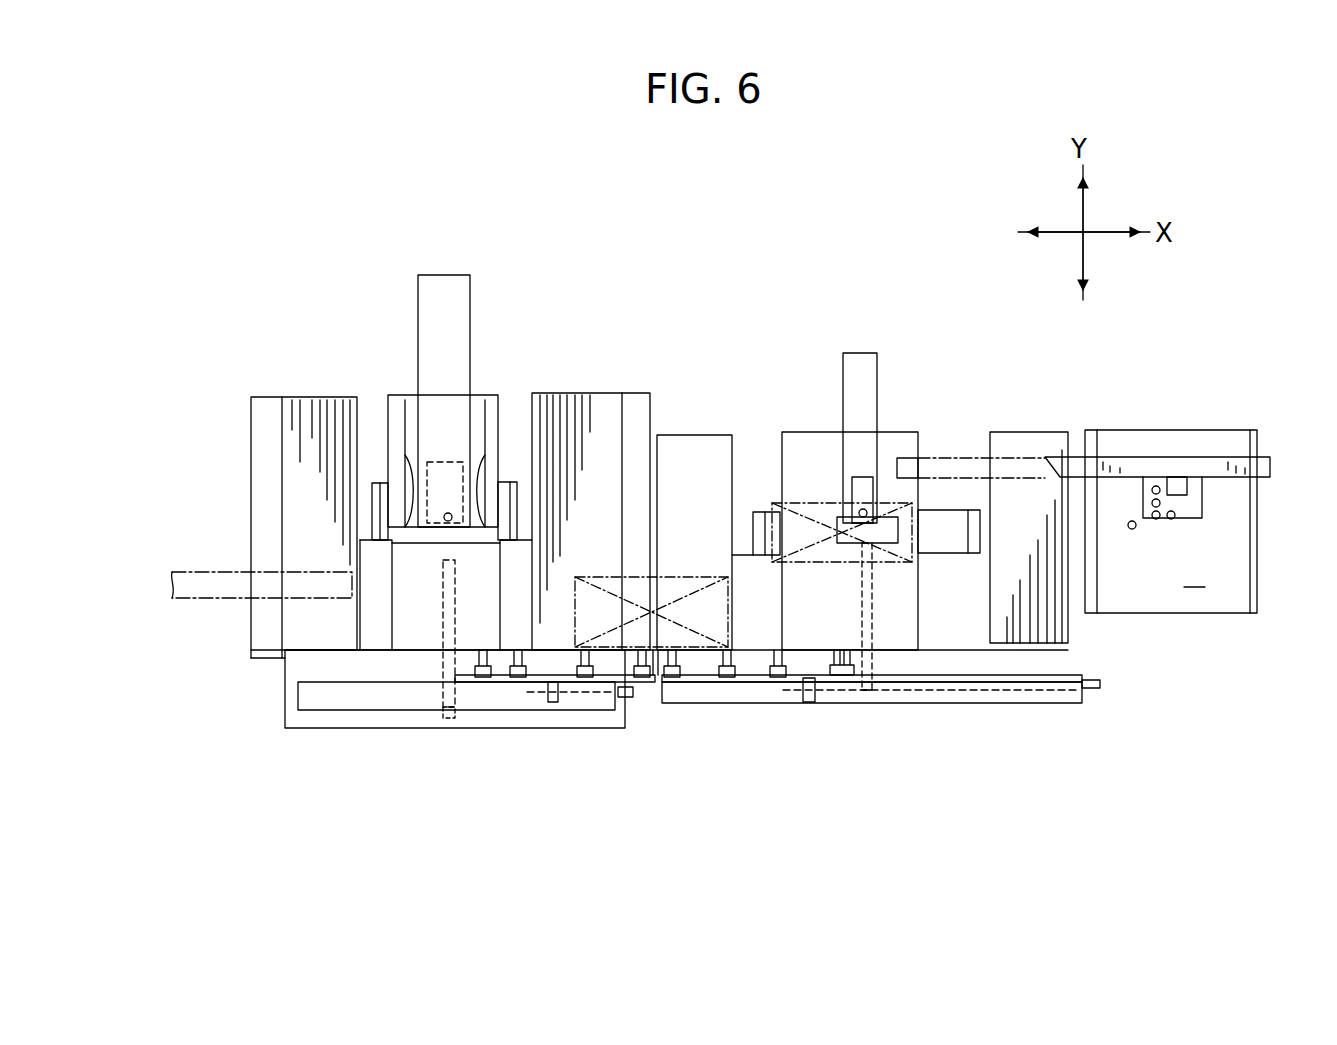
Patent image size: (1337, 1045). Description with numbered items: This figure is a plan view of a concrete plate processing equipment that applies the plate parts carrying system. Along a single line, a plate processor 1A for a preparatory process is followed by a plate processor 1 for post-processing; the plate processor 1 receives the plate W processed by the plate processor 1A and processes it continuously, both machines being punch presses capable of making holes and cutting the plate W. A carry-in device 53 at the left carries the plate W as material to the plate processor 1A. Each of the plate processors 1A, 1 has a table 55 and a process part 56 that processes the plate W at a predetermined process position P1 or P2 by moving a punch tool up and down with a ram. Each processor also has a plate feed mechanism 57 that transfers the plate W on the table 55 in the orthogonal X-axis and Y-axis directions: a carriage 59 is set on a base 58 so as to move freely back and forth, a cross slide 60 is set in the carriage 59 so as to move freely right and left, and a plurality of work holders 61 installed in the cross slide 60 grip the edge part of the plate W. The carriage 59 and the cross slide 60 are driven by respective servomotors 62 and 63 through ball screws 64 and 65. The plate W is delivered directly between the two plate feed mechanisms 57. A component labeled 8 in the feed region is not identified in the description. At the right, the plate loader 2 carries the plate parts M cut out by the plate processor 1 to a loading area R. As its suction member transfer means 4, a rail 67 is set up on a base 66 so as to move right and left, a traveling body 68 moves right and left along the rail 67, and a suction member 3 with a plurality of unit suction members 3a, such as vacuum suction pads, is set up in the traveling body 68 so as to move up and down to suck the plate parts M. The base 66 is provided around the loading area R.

The plate processor 1 is at (853, 340).
The plate processor 1A is at (441, 270).
The plate loader 2 is at (1185, 418).
The suction member 3 is at (1190, 507).
The unit suction members 3a is at (1157, 520).
The suction member transfer means 4 is at (1170, 474).
The support pin 8 is at (727, 678).
The carry-in device 53 is at (232, 575).
The table 55 is at (300, 415).
The process part 56 is at (447, 462).
The plate feed mechanism 57 is at (560, 720).
The base 58 is at (388, 482).
The carriage 59 is at (403, 700).
The cross slide 60 is at (480, 678).
The work holders 61 is at (516, 678).
The servomotor 62 is at (447, 727).
The servomotor 63 is at (627, 698).
The ball screw 64 is at (442, 615).
The ball screw 65 is at (556, 700).
The base 66 is at (1260, 488).
The rail 67 is at (1062, 456).
The traveling body 68 is at (1176, 478).
The process position P1 is at (446, 512).
The process position P2 is at (860, 508).
The plate W is at (680, 575).
The plate parts M is at (905, 473).
The loading area R is at (1194, 573).